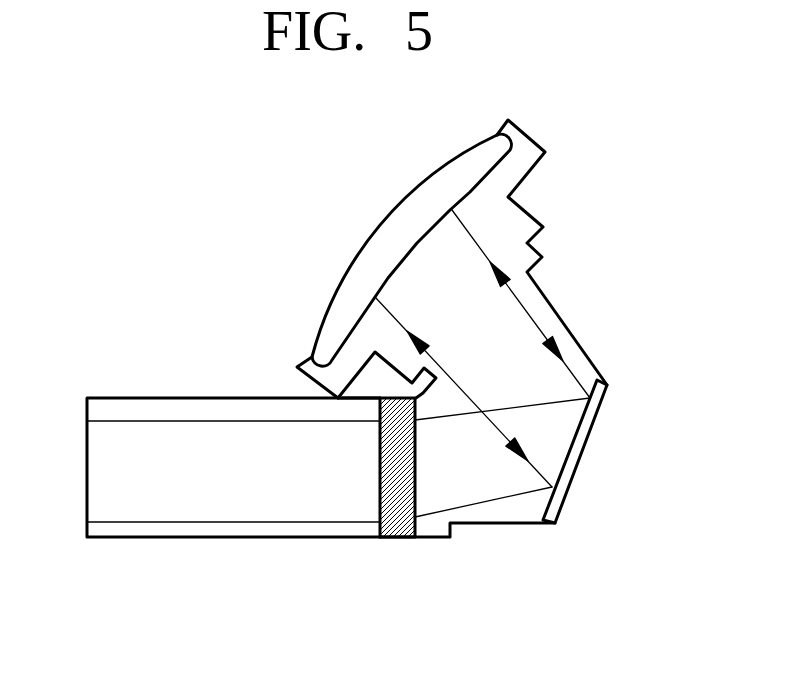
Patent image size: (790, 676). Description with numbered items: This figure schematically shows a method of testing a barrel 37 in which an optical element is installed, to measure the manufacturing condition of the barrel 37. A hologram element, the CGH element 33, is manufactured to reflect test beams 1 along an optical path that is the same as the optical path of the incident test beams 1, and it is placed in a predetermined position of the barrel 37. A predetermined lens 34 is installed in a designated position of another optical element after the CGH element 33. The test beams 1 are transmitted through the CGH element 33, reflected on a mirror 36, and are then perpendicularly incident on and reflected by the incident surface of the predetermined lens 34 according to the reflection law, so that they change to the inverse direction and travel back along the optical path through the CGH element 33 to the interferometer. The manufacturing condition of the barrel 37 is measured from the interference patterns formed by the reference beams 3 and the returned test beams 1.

The test beams 1 is at (160, 422).
The reference beams 3 is at (525, 308).
The CGH element 33 is at (395, 523).
The predetermined lens 34 is at (427, 195).
The mirror 36 is at (586, 438).
The barrel 37 is at (515, 532).